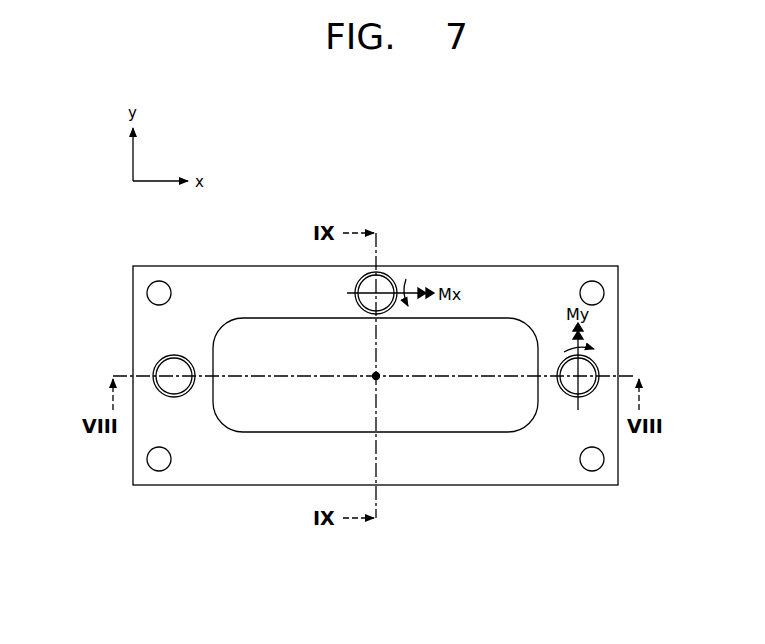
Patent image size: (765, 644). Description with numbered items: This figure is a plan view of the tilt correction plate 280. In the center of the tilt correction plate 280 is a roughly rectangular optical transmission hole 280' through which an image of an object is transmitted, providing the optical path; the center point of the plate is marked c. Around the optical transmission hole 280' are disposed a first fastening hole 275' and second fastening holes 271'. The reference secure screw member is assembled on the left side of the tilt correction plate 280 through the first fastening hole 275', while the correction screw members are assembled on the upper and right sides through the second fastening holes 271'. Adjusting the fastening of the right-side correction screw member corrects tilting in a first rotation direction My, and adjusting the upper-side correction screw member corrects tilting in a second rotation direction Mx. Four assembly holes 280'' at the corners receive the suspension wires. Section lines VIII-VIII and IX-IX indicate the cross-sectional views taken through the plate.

The tilt correction plate 280 is at (375, 352).
The optical transmission hole 280' is at (375, 426).
The assembly holes 280'' is at (422, 376).
The second fastening holes 271' is at (523, 306).
The first fastening hole 275' is at (128, 369).
The center of frame c is at (378, 378).